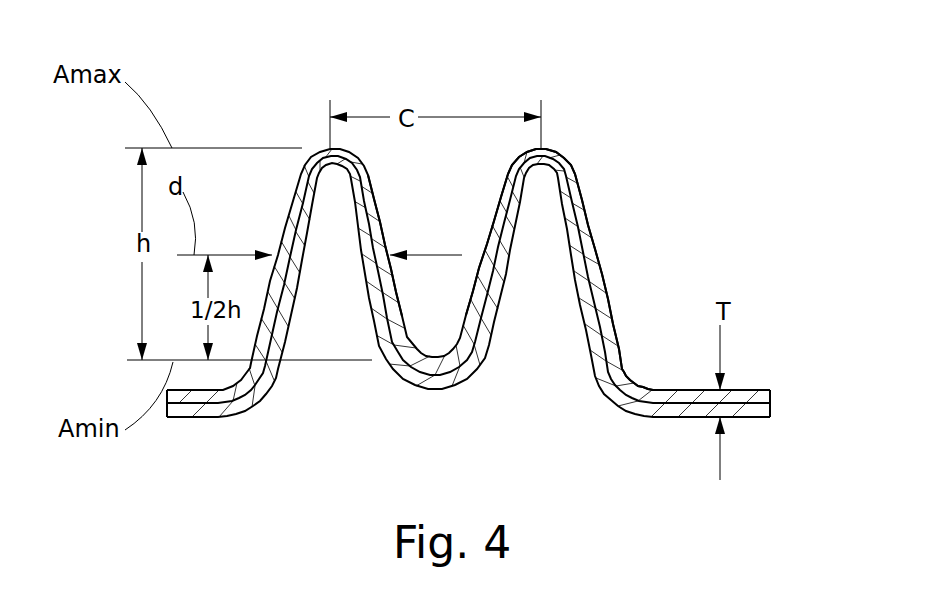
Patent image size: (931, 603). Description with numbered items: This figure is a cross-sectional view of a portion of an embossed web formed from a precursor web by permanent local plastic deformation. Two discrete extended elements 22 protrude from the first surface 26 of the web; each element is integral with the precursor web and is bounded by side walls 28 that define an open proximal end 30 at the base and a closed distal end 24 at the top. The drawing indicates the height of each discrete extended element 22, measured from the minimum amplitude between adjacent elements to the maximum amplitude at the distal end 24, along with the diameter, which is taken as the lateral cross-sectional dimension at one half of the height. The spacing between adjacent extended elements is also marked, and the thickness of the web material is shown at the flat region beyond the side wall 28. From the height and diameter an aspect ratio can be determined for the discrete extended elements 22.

The discrete extended elements 22 is at (488, 230).
The distal end 24 is at (547, 146).
The first surface 26 is at (641, 370).
The side wall 28 is at (596, 250).
The open proximal end 30 is at (538, 358).